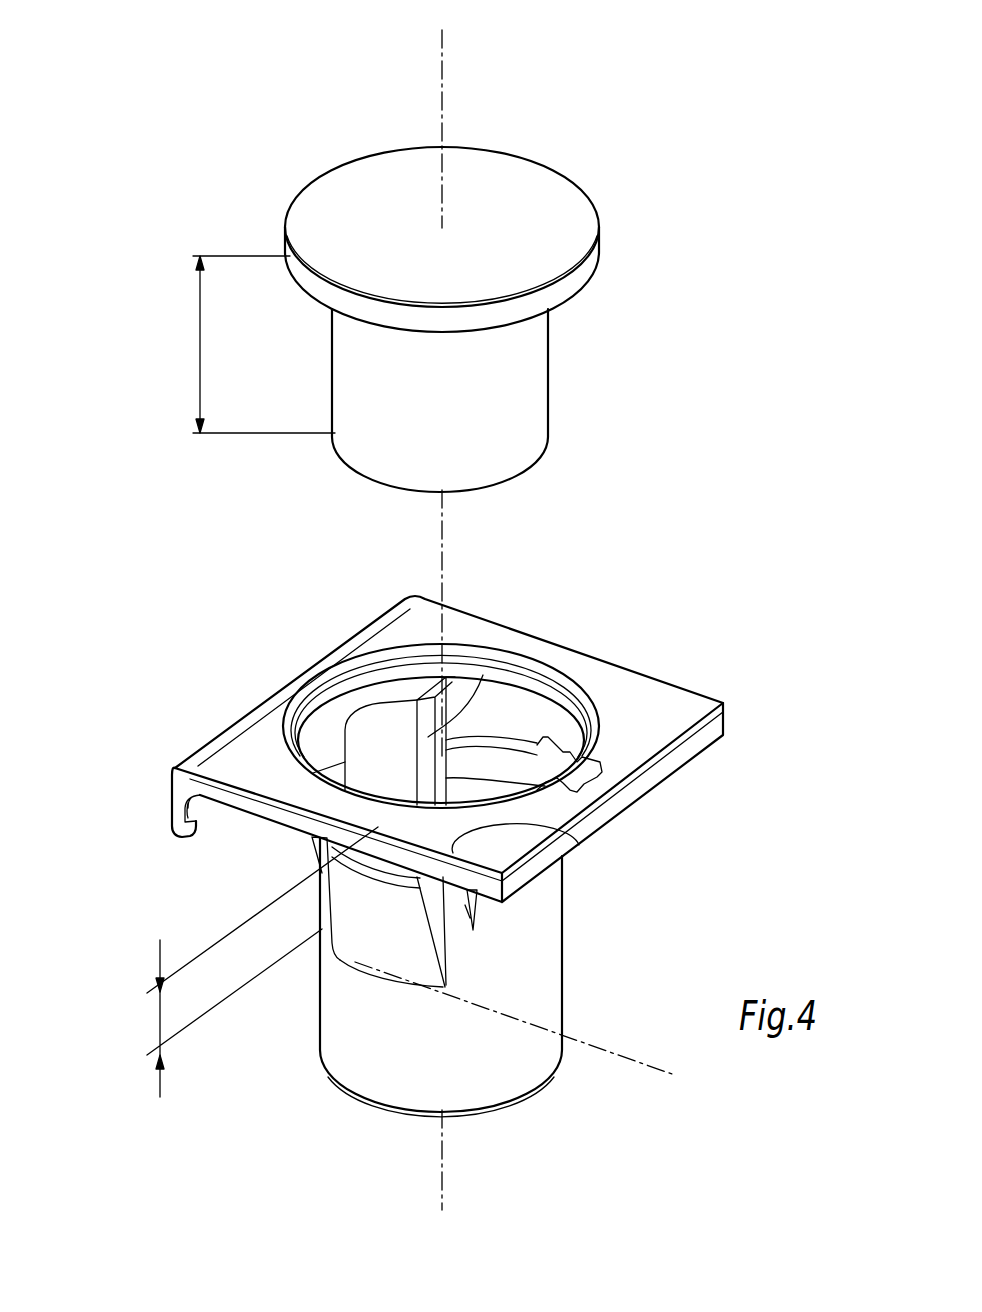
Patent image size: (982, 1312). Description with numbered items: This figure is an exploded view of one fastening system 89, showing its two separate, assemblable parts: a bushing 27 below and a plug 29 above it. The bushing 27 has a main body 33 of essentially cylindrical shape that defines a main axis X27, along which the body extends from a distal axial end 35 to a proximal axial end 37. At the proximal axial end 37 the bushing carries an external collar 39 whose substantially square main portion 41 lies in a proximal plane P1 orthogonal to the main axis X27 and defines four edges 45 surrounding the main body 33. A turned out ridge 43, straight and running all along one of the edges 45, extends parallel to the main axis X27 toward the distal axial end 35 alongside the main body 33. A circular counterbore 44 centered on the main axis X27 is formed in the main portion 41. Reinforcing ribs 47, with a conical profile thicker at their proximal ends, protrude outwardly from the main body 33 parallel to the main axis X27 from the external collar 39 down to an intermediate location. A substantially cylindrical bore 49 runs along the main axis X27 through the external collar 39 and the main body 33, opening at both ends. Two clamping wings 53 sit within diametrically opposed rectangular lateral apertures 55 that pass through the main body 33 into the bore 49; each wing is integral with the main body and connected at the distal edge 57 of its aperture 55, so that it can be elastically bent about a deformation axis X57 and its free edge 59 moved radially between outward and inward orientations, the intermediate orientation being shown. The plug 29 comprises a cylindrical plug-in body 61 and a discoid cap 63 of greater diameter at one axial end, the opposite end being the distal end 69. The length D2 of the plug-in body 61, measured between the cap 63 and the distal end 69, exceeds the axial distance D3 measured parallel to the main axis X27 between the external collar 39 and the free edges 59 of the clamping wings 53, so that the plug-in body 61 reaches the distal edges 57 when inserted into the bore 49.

The bushing 27 is at (678, 944).
The plug 29 is at (644, 306).
The main body 33 is at (467, 1005).
The distal axial end 35 is at (510, 1112).
The proximal axial end 37 is at (603, 659).
The external collar 39 is at (667, 718).
The main portion 41 is at (257, 753).
The turned out ridge 43 is at (188, 838).
The counterbore 44 is at (665, 716).
The edges 45 is at (660, 767).
The reinforcing ribs 47 is at (313, 840).
The bore 49 is at (380, 756).
The clamping wings 53 is at (510, 750).
The lateral apertures 55 is at (492, 766).
The distal edge 57 is at (373, 983).
The free edge 59 is at (573, 753).
The plug-in body 61 is at (502, 409).
The cap 63 is at (530, 200).
The distal end 69 is at (350, 467).
The fastening system 89 is at (126, 448).
The main axis X27 is at (452, 608).
The deformation axis X57 is at (536, 1027).
The proximal plane P1 is at (515, 843).
The length of the plug-in body D2 is at (254, 344).
The axial distance D3 is at (254, 962).